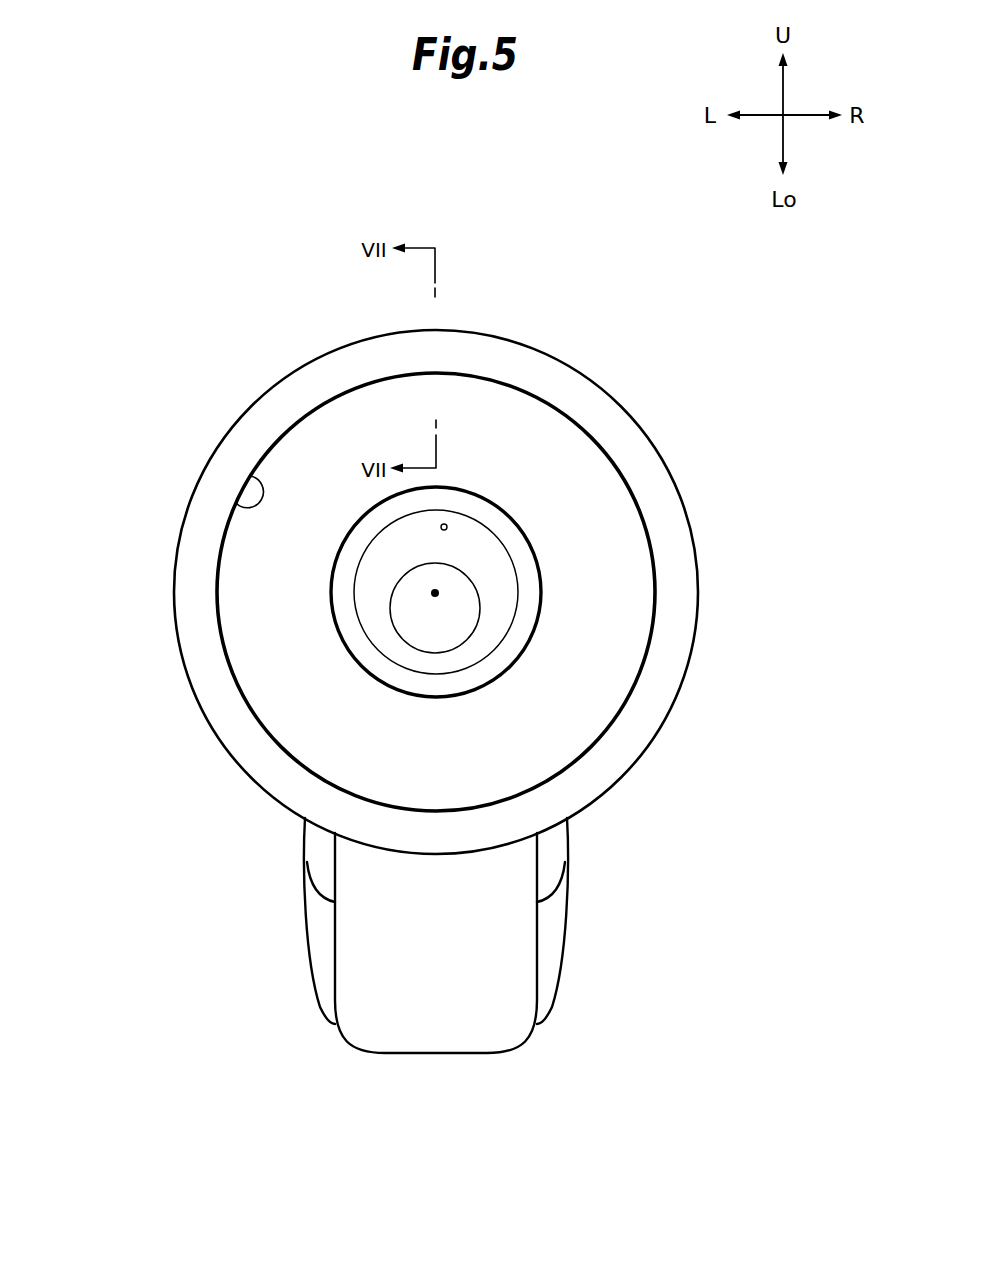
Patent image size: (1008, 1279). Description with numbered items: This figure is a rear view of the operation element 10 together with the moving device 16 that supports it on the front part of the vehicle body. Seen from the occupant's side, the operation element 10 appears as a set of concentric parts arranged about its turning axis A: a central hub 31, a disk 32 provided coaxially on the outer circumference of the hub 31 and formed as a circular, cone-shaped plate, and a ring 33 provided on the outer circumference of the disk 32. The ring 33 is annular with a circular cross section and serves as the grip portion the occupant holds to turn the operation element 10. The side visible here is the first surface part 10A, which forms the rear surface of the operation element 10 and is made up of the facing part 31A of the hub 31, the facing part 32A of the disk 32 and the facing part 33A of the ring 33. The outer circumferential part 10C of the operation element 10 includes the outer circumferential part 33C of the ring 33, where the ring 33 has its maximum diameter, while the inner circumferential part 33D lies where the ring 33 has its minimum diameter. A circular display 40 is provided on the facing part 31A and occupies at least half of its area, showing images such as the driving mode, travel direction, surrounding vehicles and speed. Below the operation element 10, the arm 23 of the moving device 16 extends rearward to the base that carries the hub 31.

The operation element 10 is at (588, 313).
The first surface part 10A is at (492, 428).
The outer circumferential part 10C is at (640, 419).
The moving device 16 is at (502, 1065).
The arm 23 is at (420, 1043).
The hub 31 is at (518, 542).
The facing part of the hub 31A is at (527, 562).
The disk 32 is at (617, 662).
The facing part of the disk 32A is at (560, 742).
The ring 33 is at (213, 702).
The facing part of the ring 33A is at (195, 624).
The outer circumferential part of the ring 33C is at (177, 551).
The inner circumferential part of the ring 33D is at (250, 478).
The display 40 is at (377, 548).
The turning axis A is at (436, 593).